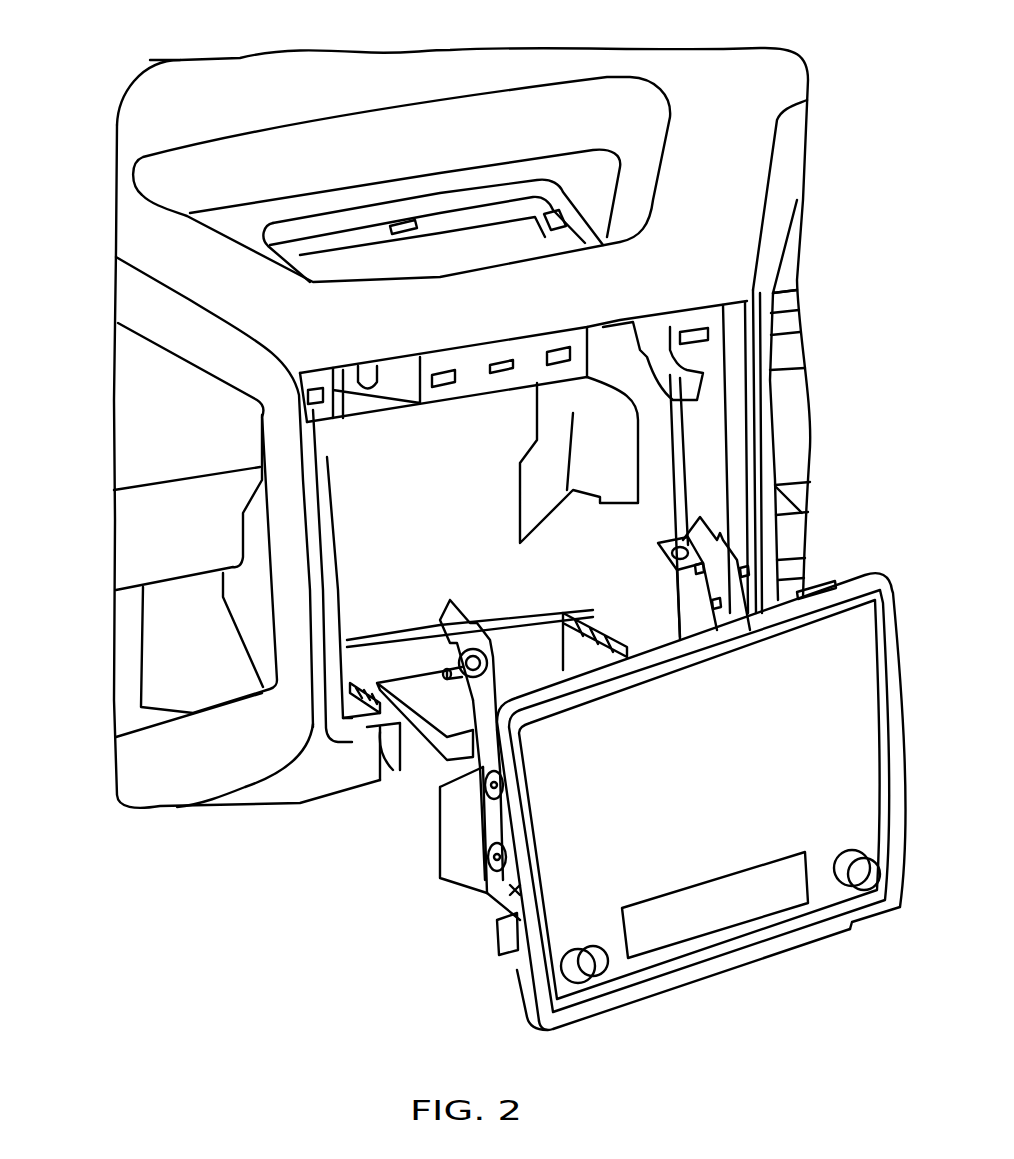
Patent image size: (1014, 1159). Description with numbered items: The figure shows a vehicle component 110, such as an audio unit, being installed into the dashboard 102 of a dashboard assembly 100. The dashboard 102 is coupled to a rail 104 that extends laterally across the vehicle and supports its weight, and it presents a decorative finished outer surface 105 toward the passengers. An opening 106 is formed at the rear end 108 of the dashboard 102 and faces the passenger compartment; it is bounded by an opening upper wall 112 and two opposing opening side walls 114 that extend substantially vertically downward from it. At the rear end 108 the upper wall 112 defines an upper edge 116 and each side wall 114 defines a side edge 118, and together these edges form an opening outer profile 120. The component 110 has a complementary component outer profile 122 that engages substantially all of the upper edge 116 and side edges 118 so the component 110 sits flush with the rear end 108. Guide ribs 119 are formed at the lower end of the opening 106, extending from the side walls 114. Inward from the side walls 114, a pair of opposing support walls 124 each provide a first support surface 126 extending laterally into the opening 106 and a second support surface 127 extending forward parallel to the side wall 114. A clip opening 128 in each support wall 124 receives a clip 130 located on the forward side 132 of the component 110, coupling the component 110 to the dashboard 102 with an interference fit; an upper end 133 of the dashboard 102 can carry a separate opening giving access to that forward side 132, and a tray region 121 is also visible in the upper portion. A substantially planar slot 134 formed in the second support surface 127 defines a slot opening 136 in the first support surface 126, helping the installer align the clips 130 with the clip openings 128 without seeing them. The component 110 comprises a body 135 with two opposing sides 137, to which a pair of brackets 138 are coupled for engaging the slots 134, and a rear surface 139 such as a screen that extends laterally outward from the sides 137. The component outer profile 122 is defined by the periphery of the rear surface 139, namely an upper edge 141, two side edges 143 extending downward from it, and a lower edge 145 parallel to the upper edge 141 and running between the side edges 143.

The dashboard assembly 100 is at (100, 93).
The dashboard 102 is at (705, 60).
The rail 104 is at (127, 520).
The decorative finished outer surface 105 is at (772, 100).
The opening 106 is at (740, 475).
The rear end 108 is at (285, 775).
The component 110 is at (918, 785).
The opening upper wall 112 is at (358, 370).
The opening side walls 114 is at (313, 490).
The upper edge 116 is at (412, 352).
The side edge 118 is at (318, 515).
The guide rib 119 is at (380, 730).
The opening outer profile 120 is at (725, 296).
The storage tray 121 is at (375, 272).
The component outer profile 122 is at (530, 970).
The support walls 124 is at (343, 508).
The first support surface 126 is at (335, 483).
The second support surface 127 is at (647, 480).
The clip opening 128 is at (313, 388).
The clip 130 is at (825, 570).
The forward side 132 is at (855, 585).
The upper end 133 is at (455, 75).
The slot 134 is at (645, 340).
The body 135 is at (447, 878).
The slot opening 136 is at (688, 398).
The sides 137 is at (452, 838).
The brackets 138 is at (455, 622).
The rear surface 139 is at (670, 873).
The upper edge 141 is at (655, 655).
The side edges 143 is at (515, 892).
The lower edge 145 is at (763, 950).